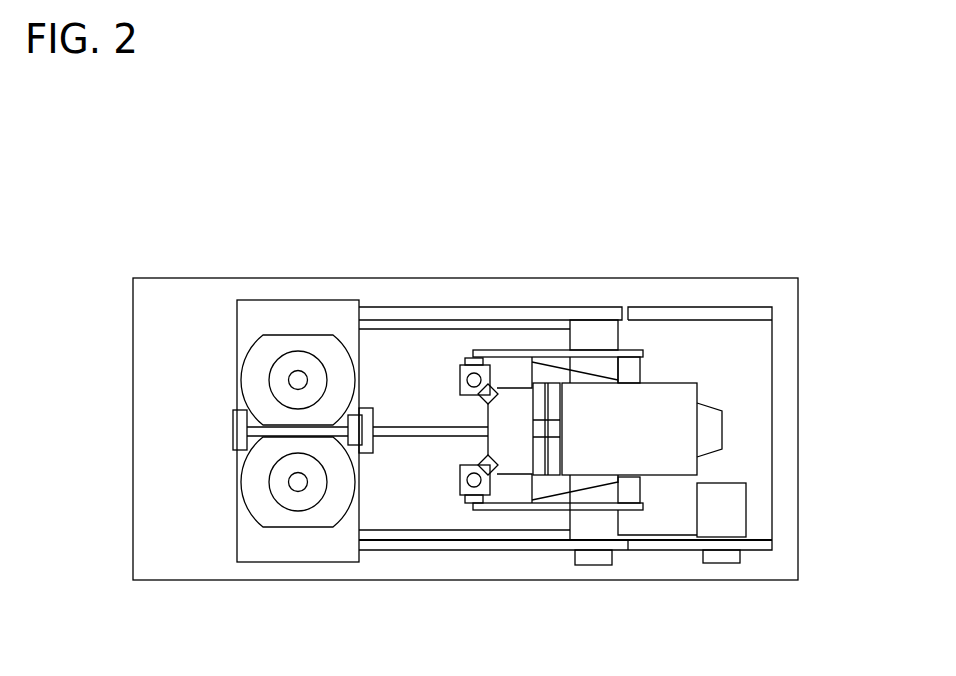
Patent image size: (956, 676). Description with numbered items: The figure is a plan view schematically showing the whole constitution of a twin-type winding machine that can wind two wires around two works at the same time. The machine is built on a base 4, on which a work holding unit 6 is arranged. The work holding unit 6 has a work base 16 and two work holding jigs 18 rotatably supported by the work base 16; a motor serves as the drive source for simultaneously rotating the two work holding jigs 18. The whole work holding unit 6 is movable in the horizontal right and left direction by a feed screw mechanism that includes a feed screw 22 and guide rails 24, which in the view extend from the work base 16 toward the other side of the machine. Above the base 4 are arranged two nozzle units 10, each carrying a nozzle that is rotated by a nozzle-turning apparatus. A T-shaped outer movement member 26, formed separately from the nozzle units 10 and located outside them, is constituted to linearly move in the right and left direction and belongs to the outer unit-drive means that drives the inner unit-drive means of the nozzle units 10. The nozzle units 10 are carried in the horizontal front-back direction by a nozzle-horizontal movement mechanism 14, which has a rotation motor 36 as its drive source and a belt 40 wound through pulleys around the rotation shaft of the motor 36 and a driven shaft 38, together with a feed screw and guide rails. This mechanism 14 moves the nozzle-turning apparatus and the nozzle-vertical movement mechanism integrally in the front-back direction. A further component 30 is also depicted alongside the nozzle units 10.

The base 4 is at (798, 463).
The work holding unit 6 is at (236, 520).
The nozzle unit 10 is at (460, 378).
The nozzle-horizontal movement mechanism 14 is at (686, 568).
The work base 16 is at (306, 555).
The work holding jig 18 is at (298, 352).
The feed screw 22 is at (400, 423).
The guide rail 24 is at (457, 318).
The outer movement member 26 is at (548, 351).
The motor 30 is at (686, 399).
The rotation motor 36 is at (733, 518).
The driven shaft 38 is at (595, 566).
The belt 40 is at (657, 545).